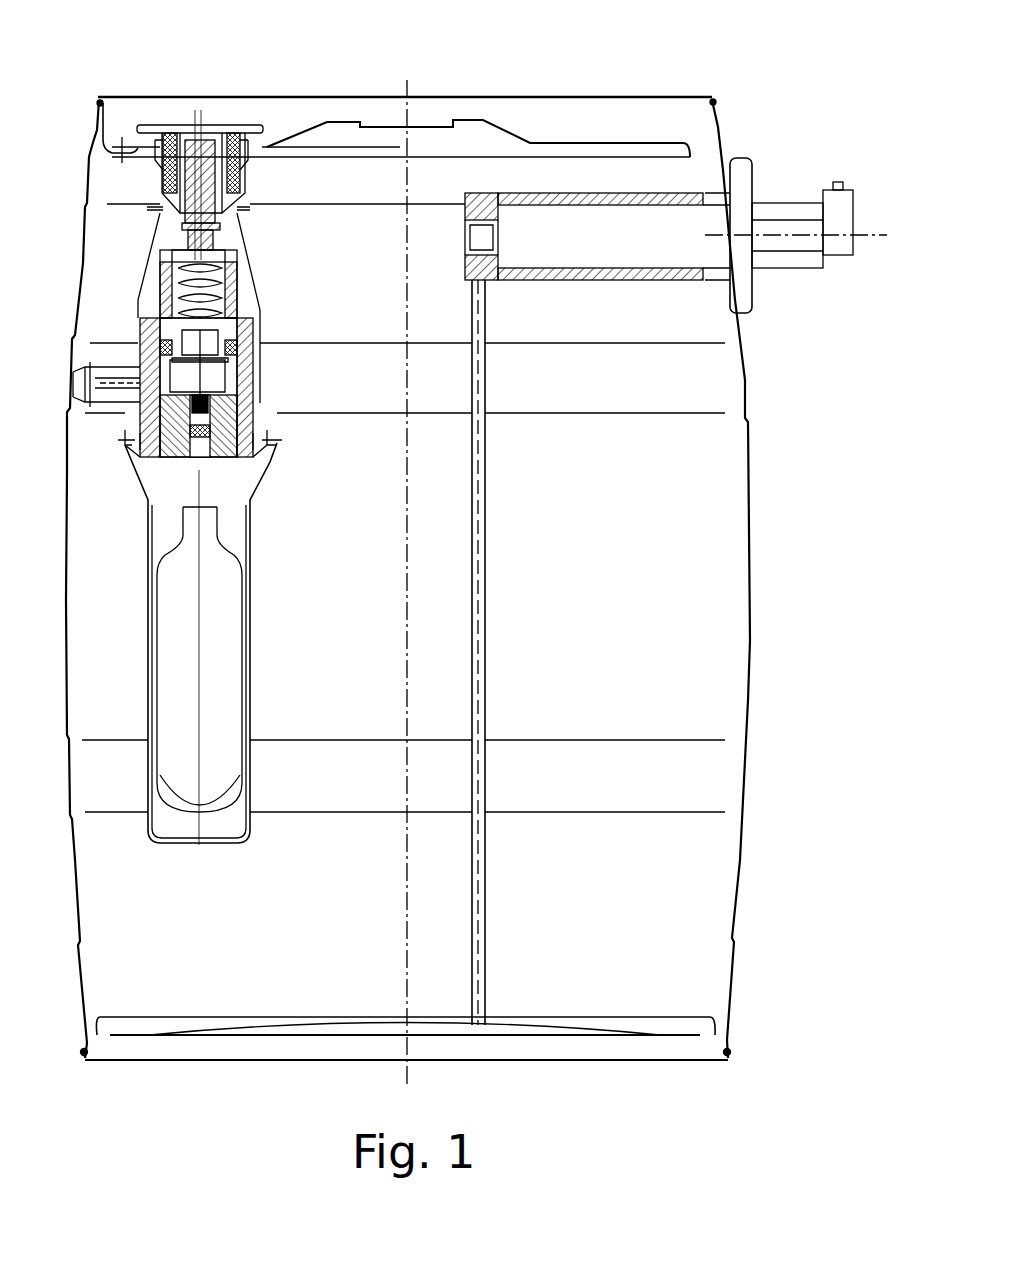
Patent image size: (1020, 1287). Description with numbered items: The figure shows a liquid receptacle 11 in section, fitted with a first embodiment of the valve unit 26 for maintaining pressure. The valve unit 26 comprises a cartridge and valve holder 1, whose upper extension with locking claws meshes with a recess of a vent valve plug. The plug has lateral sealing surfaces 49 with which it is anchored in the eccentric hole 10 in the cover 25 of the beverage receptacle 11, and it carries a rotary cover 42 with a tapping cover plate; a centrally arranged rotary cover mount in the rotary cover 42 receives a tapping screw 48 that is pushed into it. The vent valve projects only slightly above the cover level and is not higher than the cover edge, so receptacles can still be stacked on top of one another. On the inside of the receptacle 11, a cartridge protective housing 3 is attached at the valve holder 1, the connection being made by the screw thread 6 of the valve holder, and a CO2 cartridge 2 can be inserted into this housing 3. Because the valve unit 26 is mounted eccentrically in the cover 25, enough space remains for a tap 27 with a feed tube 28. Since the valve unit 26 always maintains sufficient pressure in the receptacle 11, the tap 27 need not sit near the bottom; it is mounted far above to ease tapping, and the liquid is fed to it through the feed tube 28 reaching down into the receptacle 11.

The valve holder 1 is at (263, 290).
The cartridge 2 is at (222, 597).
The cartridge protective housing 3 is at (252, 528).
The screw thread of valve holder/cartridge holder 6 is at (277, 442).
The hole in the receptacle cover 10 is at (262, 137).
The liquid receptacle 11 is at (750, 642).
The cover 25 is at (522, 140).
The valve unit 26 is at (243, 363).
The tap 27 is at (633, 265).
The feed tube 28 is at (478, 555).
The rotary cover 42 is at (227, 133).
The tapping screw 48 is at (233, 217).
The sealing surfaces 49 is at (162, 147).